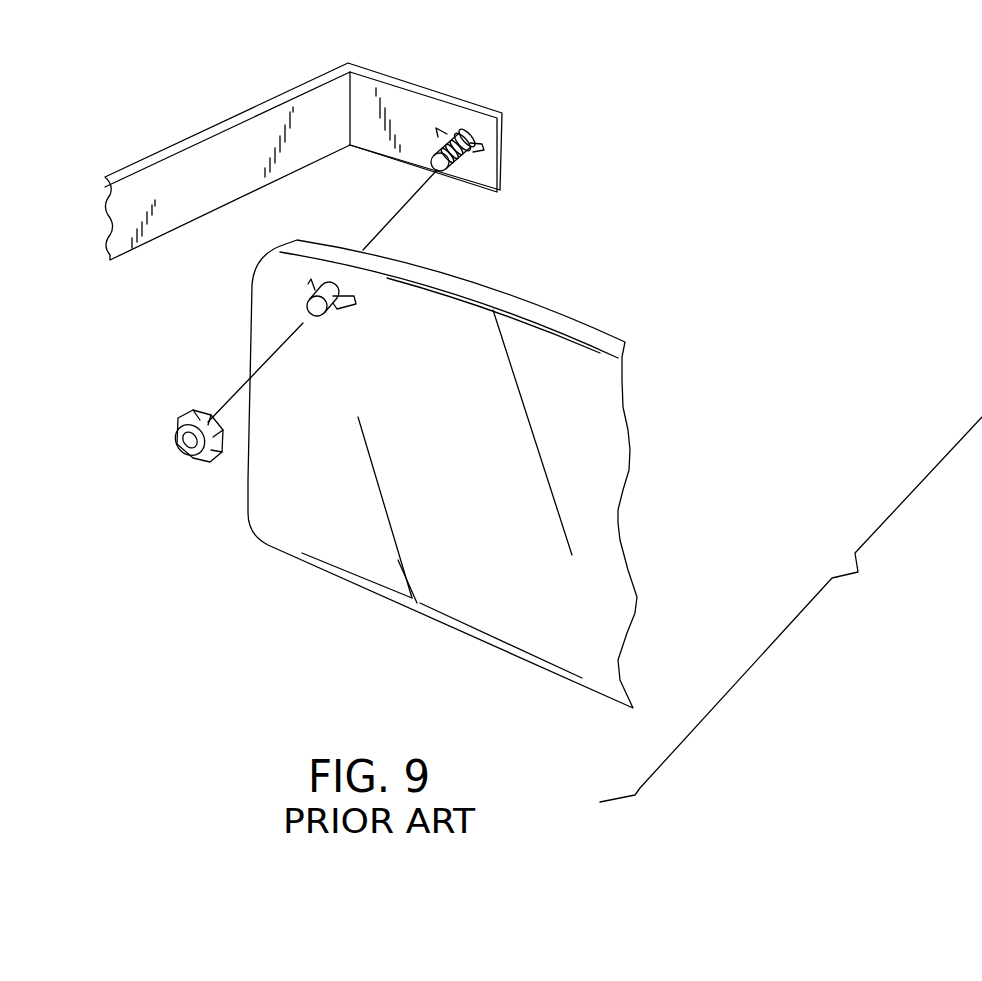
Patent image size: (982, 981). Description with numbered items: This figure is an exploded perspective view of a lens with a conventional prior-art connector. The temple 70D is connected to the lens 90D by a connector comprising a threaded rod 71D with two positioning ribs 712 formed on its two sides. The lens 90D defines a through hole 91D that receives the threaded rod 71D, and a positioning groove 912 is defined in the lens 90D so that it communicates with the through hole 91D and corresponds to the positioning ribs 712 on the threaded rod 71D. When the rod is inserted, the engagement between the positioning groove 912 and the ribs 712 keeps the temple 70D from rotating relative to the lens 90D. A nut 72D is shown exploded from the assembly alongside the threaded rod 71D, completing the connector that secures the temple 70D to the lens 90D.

The temple 70D is at (271, 85).
The threaded rod 71D is at (455, 167).
The positioning ribs 712 is at (478, 152).
The lens 90D is at (606, 306).
The through hole 91D is at (320, 313).
The positioning groove 912 is at (352, 282).
The nut 72D is at (195, 456).